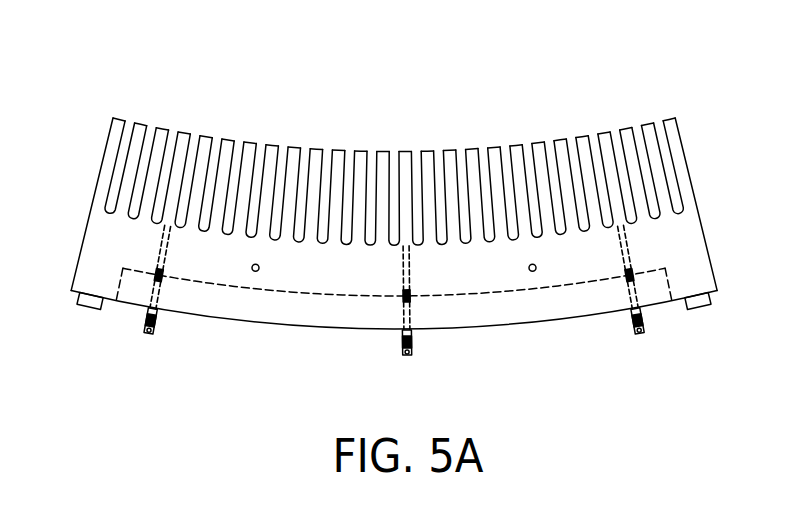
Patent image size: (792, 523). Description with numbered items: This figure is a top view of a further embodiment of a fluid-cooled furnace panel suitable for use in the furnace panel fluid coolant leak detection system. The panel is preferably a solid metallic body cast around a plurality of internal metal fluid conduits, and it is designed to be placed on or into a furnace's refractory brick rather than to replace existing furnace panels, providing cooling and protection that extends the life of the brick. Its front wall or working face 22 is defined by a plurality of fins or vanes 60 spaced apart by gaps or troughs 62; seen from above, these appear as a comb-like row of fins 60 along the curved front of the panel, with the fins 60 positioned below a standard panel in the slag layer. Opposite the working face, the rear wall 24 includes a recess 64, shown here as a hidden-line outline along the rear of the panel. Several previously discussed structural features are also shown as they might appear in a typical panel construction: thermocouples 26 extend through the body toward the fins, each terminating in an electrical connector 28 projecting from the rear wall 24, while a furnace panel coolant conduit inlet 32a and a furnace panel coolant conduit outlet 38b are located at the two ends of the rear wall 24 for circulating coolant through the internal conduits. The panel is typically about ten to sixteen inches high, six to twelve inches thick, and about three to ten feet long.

The gaps or troughs 62 is at (194, 147).
The fins or vanes 60 is at (294, 147).
The front wall or working face 22 is at (494, 135).
The thermocouples 26 is at (628, 246).
The electrical connectors 28 is at (143, 323).
The recess 64 is at (270, 297).
The rear wall 24 is at (533, 323).
The furnace panel coolant conduit inlet 32a is at (87, 308).
The furnace panel coolant conduit outlet 38b is at (697, 307).